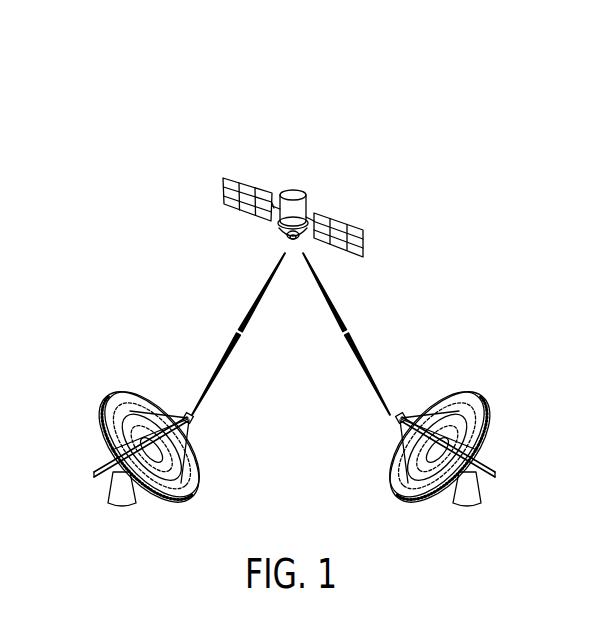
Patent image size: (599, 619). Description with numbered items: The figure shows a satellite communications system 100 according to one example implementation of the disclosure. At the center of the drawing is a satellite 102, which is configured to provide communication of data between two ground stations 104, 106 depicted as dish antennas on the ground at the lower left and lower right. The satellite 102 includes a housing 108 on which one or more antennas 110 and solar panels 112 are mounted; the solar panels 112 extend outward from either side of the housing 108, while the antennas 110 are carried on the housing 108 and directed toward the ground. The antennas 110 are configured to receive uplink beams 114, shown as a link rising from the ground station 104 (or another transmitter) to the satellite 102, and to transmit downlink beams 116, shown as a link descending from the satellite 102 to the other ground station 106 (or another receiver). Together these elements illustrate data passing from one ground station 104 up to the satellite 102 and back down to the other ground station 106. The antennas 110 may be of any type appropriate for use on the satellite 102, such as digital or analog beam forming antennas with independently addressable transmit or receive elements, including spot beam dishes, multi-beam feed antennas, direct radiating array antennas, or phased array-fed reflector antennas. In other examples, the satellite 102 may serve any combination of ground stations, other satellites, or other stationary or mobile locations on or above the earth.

The satellite communications system 100 is at (345, 30).
The satellite 102 is at (230, 160).
The ground station 104 is at (110, 490).
The ground station 106 is at (473, 490).
The housing 108 is at (310, 203).
The antennas 110 is at (283, 243).
The solar panels 112 is at (365, 247).
The uplink beams 114 is at (230, 345).
The downlink beams 116 is at (356, 345).